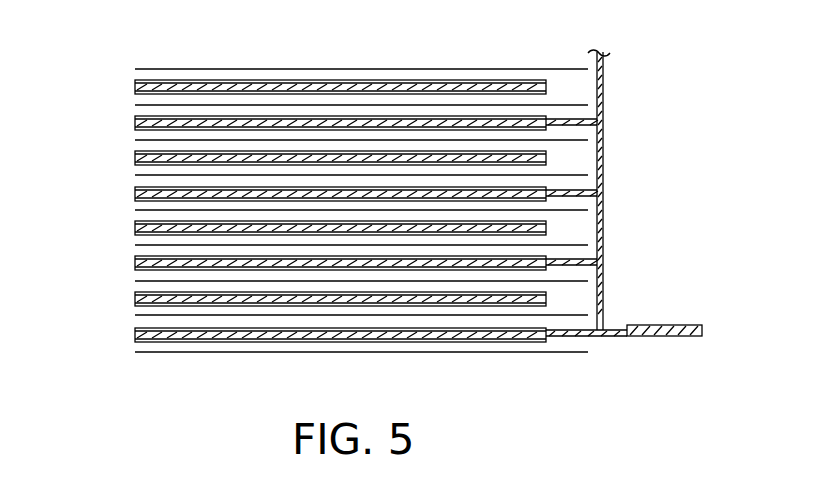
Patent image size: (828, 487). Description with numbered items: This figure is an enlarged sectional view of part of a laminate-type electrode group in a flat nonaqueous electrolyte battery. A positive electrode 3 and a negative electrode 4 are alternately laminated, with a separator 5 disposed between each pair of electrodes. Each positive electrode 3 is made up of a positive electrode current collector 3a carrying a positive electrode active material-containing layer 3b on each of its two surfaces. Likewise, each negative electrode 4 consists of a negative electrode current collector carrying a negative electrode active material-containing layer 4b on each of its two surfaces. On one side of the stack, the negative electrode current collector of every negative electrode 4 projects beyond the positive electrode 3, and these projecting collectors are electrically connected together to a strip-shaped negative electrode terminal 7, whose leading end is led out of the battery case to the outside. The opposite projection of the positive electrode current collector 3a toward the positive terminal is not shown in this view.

The positive electrode 3 is at (279, 215).
The positive electrode current collector 3a is at (138, 300).
The positive electrode active material-containing layer 3b is at (138, 293).
The negative electrode 4 is at (301, 278).
The negative electrode active material-containing layer 4b is at (137, 330).
The separator 5 is at (418, 69).
The negative electrode terminal 7 is at (675, 323).